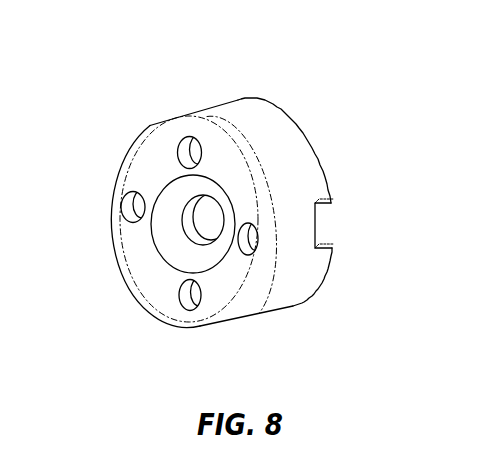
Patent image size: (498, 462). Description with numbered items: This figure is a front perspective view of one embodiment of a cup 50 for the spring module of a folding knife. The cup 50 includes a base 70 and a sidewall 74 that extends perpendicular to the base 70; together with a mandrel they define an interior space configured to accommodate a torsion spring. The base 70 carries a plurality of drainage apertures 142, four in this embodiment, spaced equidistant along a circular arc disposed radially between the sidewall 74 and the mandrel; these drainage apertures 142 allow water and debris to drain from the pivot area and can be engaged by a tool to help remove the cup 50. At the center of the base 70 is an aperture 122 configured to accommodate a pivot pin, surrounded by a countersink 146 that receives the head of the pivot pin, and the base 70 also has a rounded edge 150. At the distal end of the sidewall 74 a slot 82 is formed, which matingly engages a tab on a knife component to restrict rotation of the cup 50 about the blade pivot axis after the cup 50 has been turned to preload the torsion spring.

The cup 50 is at (111, 64).
The base 70 is at (150, 264).
The sidewall 74 is at (279, 133).
The slot 82 is at (320, 224).
The rounded edge 150 is at (262, 193).
The countersink 146 is at (168, 203).
The aperture 122 is at (197, 241).
The drainage aperture 142 is at (178, 147).